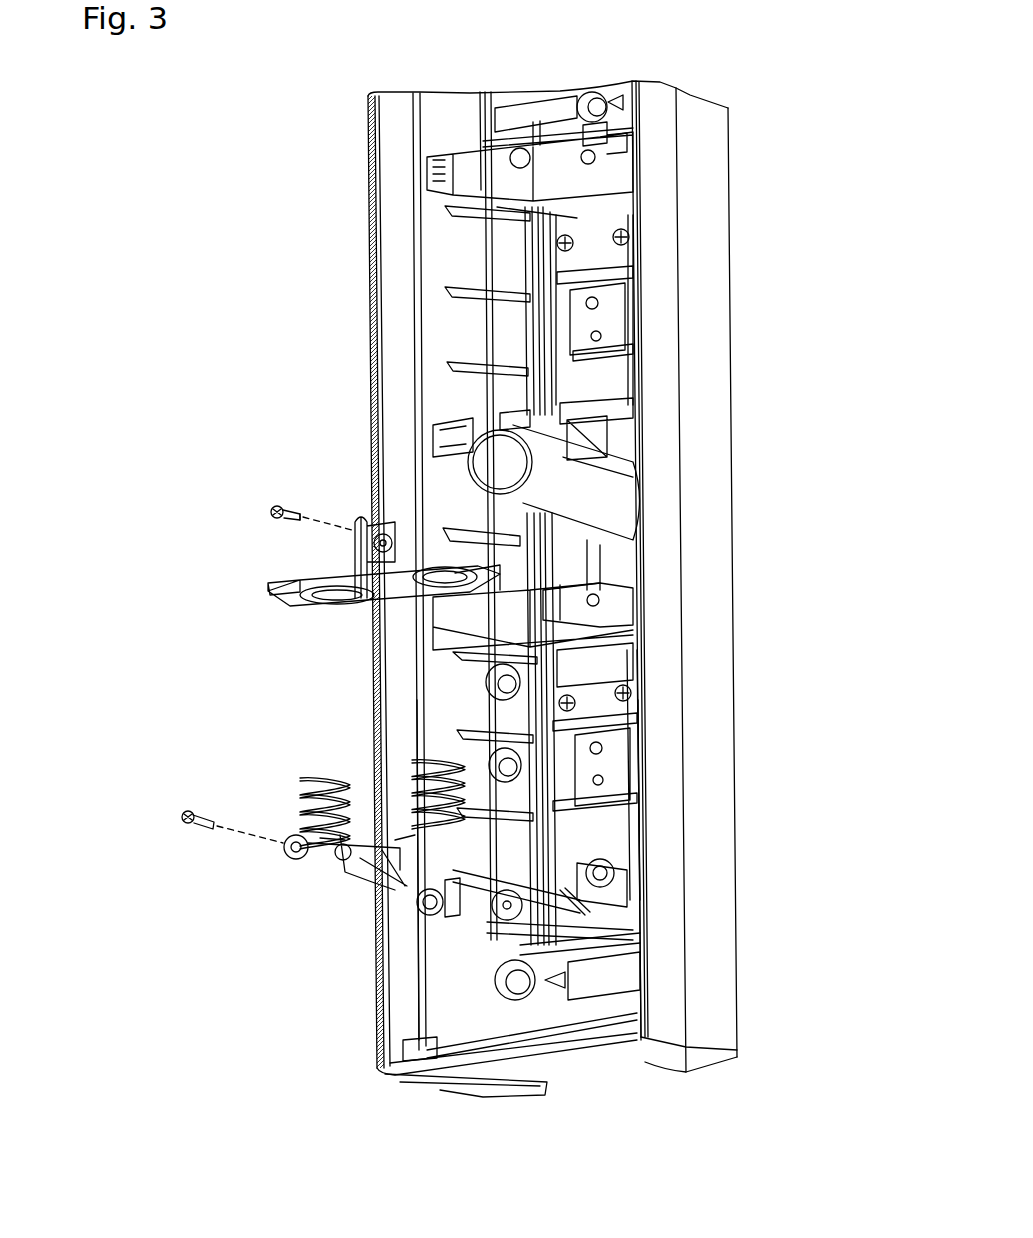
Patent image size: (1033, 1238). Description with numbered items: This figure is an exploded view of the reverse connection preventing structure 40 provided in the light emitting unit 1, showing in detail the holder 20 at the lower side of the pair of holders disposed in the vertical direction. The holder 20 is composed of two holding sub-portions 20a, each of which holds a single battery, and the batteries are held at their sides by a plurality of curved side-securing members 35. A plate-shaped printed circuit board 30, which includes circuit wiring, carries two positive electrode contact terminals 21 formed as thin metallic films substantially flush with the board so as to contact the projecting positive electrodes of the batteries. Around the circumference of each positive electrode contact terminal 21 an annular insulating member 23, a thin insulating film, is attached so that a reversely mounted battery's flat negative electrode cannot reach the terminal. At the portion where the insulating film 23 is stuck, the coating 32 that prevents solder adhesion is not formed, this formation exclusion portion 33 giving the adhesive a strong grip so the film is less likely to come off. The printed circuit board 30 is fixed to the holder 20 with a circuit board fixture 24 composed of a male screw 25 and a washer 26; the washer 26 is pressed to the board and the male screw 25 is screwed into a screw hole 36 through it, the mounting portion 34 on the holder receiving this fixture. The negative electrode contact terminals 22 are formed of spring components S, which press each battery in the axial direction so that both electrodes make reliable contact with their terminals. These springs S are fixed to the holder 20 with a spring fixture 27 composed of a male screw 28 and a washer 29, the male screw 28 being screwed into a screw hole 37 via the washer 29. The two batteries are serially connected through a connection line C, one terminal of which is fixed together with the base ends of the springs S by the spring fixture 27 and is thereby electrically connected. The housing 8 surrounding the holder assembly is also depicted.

The light emitting unit 1 is at (320, 250).
The housing 8 is at (707, 455).
The holder 20 is at (339, 330).
The holding sub-portion 20a is at (669, 743).
The positive electrode contact terminal 21 is at (337, 597).
The negative electrode contact terminal 22 is at (423, 763).
The insulating member 23 is at (298, 603).
The circuit board fixture 24 is at (184, 462).
The male screw 25 is at (287, 511).
The washer 26 is at (367, 556).
The spring fixture 27 is at (153, 732).
The male screw 28 is at (199, 813).
The washer 29 is at (284, 840).
The printed circuit board 30 is at (372, 568).
The coating 32 is at (367, 608).
The formation exclusion portion 33 is at (348, 607).
The hinge bracket 34 is at (372, 515).
The side-securing member 35 is at (460, 658).
The screw hole 36 is at (545, 602).
The screw hole 37 is at (645, 938).
The reverse connection preventing structure 40 is at (84, 315).
The spring component S is at (318, 797).
The connection line C is at (375, 878).